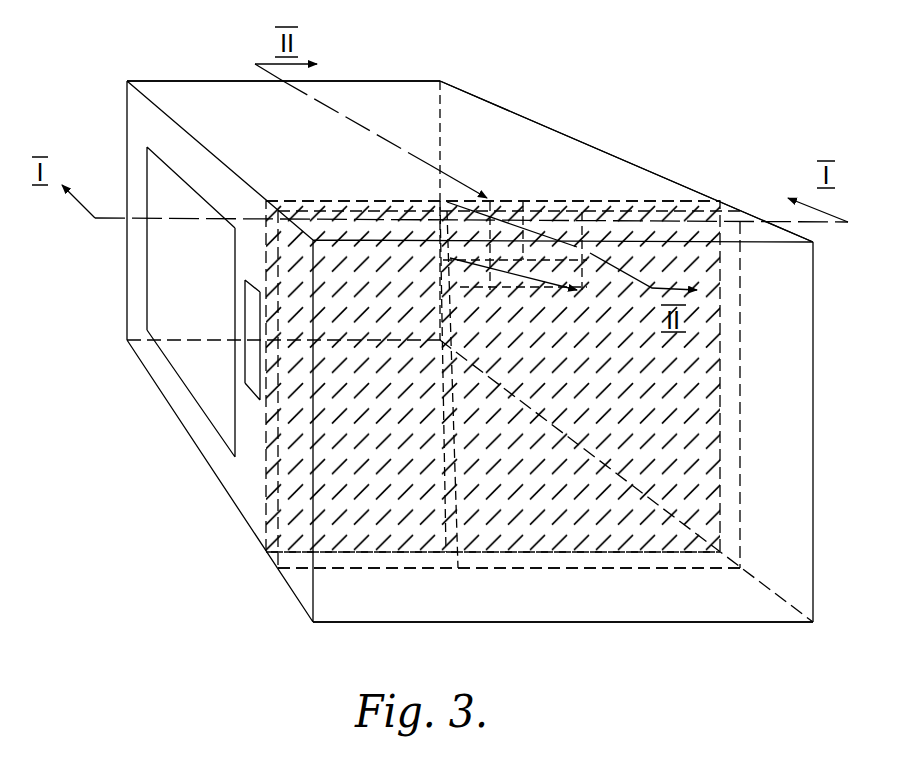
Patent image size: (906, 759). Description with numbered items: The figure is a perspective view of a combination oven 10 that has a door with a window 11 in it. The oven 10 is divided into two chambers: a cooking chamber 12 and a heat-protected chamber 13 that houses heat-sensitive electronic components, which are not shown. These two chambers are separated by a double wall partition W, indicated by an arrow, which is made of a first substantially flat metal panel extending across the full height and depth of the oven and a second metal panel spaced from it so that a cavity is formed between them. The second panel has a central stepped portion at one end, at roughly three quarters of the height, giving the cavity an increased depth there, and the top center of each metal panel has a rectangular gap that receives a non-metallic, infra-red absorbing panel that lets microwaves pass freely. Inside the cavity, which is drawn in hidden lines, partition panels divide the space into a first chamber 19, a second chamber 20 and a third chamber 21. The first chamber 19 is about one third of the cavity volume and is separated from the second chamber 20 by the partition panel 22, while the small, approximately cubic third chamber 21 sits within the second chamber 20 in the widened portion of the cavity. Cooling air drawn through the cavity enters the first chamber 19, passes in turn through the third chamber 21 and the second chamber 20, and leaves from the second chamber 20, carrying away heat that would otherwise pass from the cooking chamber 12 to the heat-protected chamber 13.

The duct housing 10 is at (197, 447).
The inlet opening 11 is at (187, 342).
The cooking chamber 12 is at (476, 128).
The heat-protected chamber 13 is at (570, 603).
The first chamber 19 is at (413, 538).
The second chamber 20 is at (680, 418).
The third chamber 21 is at (507, 227).
The partition panel 22 is at (437, 489).
The double wall partition W is at (658, 202).